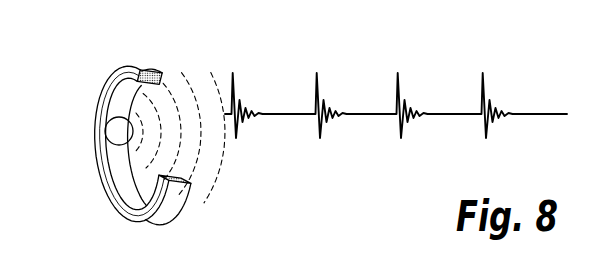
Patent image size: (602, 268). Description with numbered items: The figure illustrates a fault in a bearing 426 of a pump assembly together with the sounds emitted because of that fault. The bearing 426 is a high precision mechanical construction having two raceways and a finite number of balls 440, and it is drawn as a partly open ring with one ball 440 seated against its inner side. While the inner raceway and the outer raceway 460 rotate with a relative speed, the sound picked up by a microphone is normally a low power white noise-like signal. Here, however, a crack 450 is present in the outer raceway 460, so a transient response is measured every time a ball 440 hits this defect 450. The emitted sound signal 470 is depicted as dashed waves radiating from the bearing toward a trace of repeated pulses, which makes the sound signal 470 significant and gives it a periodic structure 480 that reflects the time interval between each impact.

The bearing 426 is at (158, 59).
The balls 440 is at (129, 133).
The crack 450 is at (111, 175).
The outer raceway 460 is at (173, 210).
The sound signal 470 is at (193, 111).
The periodic structure 480 is at (407, 74).